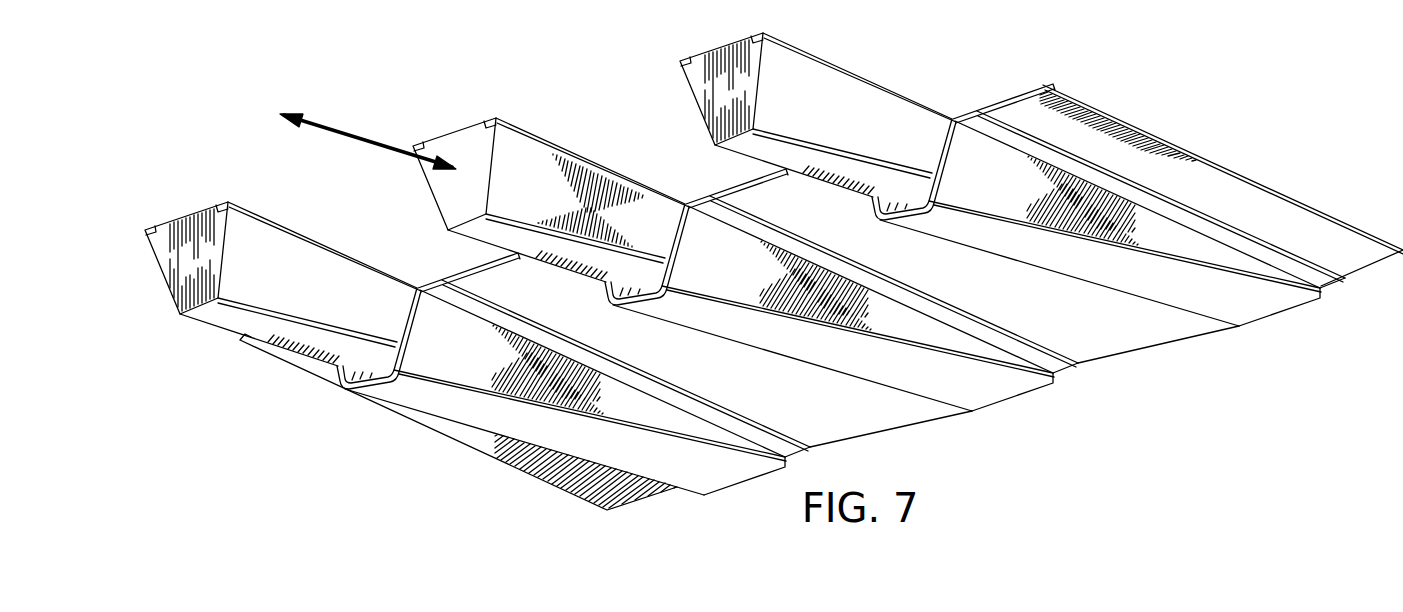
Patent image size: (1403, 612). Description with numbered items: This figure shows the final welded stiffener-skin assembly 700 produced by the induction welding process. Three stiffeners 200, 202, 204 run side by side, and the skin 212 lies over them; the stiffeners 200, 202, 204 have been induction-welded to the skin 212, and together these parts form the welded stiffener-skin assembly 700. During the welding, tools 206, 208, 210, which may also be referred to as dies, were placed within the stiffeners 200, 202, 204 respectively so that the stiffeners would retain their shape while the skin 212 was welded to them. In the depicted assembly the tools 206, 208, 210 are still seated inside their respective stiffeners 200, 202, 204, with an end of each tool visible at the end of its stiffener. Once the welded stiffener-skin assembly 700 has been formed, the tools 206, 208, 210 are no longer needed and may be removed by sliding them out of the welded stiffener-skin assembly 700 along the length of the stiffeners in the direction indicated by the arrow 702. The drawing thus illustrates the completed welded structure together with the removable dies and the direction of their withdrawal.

The stiffener 200 is at (463, 413).
The stiffener 202 is at (842, 362).
The stiffener 204 is at (1257, 312).
The tool 206 is at (167, 272).
The tool 208 is at (433, 187).
The tool 210 is at (700, 100).
The skin 212 is at (1205, 157).
The welded stiffener-skin assembly 700 is at (1099, 302).
The arrow 702 is at (367, 140).